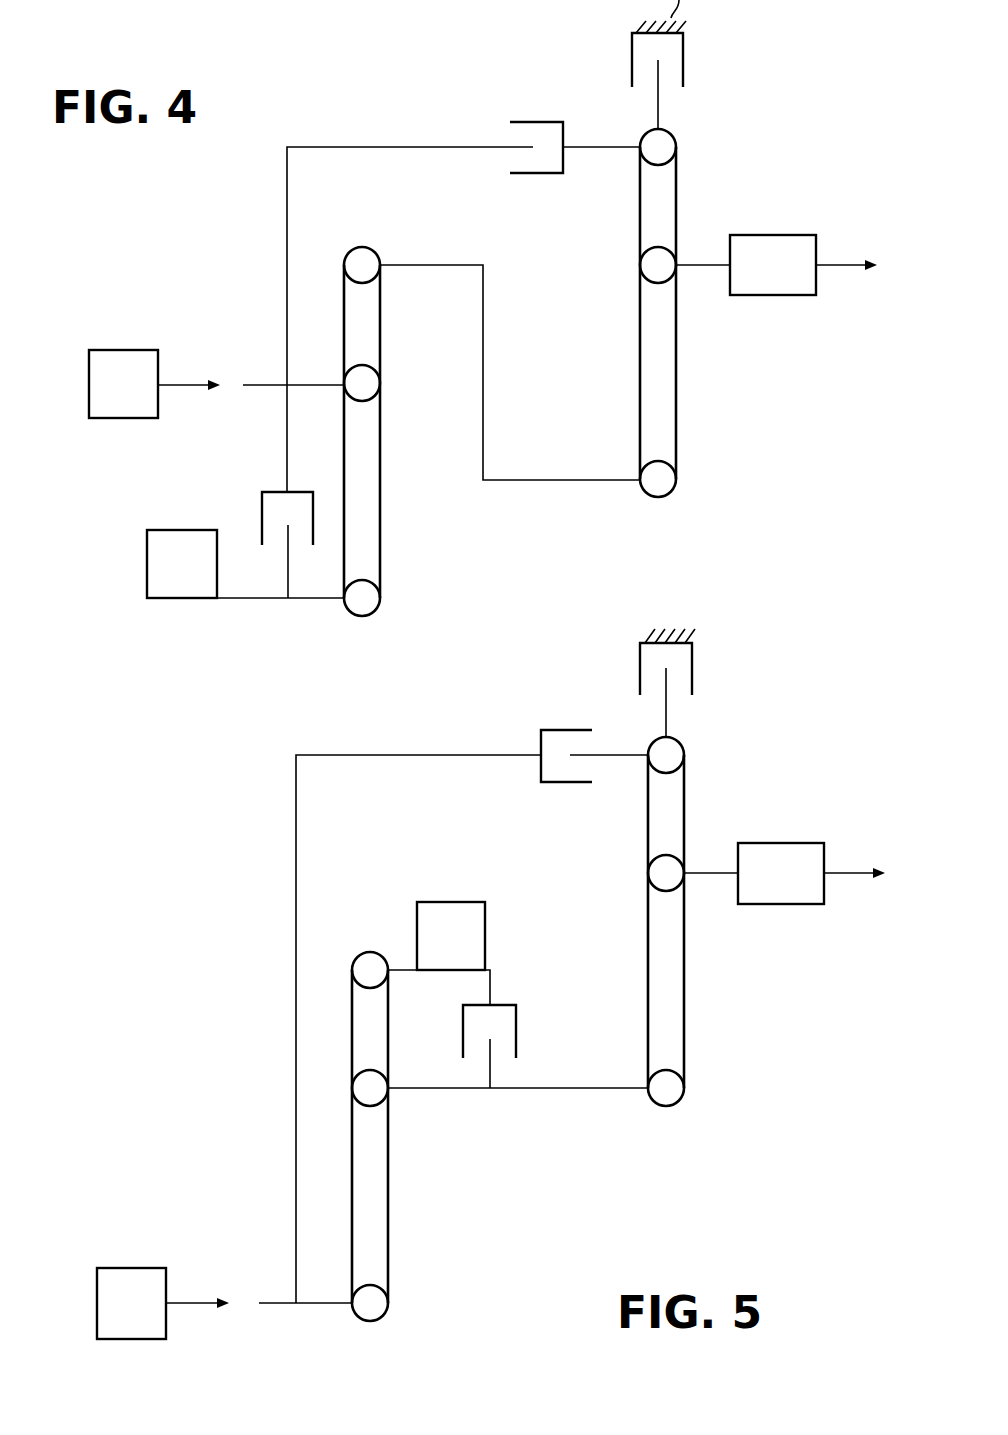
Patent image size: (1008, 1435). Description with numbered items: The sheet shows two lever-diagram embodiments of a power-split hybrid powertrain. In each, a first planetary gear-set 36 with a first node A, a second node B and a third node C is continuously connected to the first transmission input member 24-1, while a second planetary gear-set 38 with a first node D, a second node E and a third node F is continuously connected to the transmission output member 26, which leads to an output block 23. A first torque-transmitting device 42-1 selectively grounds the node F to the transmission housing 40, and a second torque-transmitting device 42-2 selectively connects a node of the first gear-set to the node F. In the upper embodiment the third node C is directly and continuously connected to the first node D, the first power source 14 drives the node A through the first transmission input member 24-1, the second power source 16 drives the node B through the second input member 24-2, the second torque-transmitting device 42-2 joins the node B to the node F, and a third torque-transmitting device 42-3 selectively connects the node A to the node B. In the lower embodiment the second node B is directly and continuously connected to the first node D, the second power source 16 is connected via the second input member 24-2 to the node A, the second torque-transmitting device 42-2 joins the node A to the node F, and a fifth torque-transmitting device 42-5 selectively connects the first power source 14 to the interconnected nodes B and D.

In FIG. 4, the first power source 14 is at (147, 565).
In FIG. 5, the first power source 14 is at (462, 902).
In FIG. 4, the second power source 16 is at (89, 385).
In FIG. 5, the second power source 16 is at (97, 1303).
In FIG. 4, the output device 23 is at (817, 290).
In FIG. 5, the output device 23 is at (824, 895).
In FIG. 4, the first transmission input member 24-1 is at (245, 598).
In FIG. 5, the first transmission input member 24-1 is at (404, 969).
In FIG. 4, the second input member 24-2 is at (256, 385).
In FIG. 5, the second input member 24-2 is at (322, 1303).
In FIG. 4, the transmission output member 26 is at (697, 265).
In FIG. 5, the transmission output member 26 is at (705, 873).
In FIG. 4, the first planetary gear-set 36 is at (374, 431).
In FIG. 5, the first planetary gear-set 36 is at (386, 1136).
In FIG. 4, the second planetary gear-set 38 is at (712, 313).
In FIG. 5, the second planetary gear-set 38 is at (719, 921).
In FIG. 5, the transmission housing 40 is at (682, 636).
In FIG. 4, the first torque-transmitting device 42-1 is at (686, 60).
In FIG. 5, the first torque-transmitting device 42-1 is at (695, 668).
In FIG. 4, the second torque-transmitting device 42-2 is at (545, 122).
In FIG. 5, the second torque-transmitting device 42-2 is at (555, 730).
In FIG. 4, the third torque-transmitting device 42-3 is at (262, 525).
In FIG. 5, the fifth torque-transmitting device 42-5 is at (516, 1040).
In FIG. 4, the first node A is at (381, 594).
In FIG. 5, the first node A is at (388, 1298).
In FIG. 4, the second node B is at (362, 402).
In FIG. 5, the second node B is at (388, 1080).
In FIG. 4, the third node C is at (360, 280).
In FIG. 5, the third node C is at (370, 988).
In FIG. 4, the first node D is at (639, 472).
In FIG. 5, the first node D is at (647, 1080).
In FIG. 4, the second node E is at (655, 285).
In FIG. 5, the second node E is at (663, 893).
In FIG. 4, the third node F is at (660, 167).
In FIG. 5, the third node F is at (667, 775).